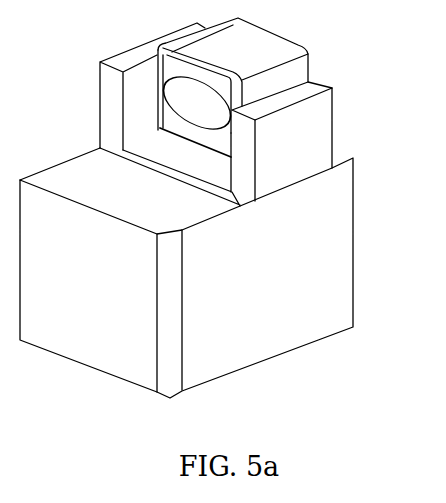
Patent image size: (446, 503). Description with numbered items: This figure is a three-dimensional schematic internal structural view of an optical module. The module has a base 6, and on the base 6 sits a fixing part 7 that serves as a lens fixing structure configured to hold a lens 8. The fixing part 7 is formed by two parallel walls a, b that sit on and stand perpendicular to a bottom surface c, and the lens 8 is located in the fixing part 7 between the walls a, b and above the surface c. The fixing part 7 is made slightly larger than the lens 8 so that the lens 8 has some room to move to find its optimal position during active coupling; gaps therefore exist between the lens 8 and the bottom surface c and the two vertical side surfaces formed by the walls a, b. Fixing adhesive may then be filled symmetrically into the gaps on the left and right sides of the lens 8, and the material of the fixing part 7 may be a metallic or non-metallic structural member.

The base 6 is at (192, 292).
The fixing part 7 is at (295, 137).
The lens 8 is at (265, 84).
The wall a is at (300, 111).
The wall b is at (110, 77).
The bottom surface c is at (172, 160).